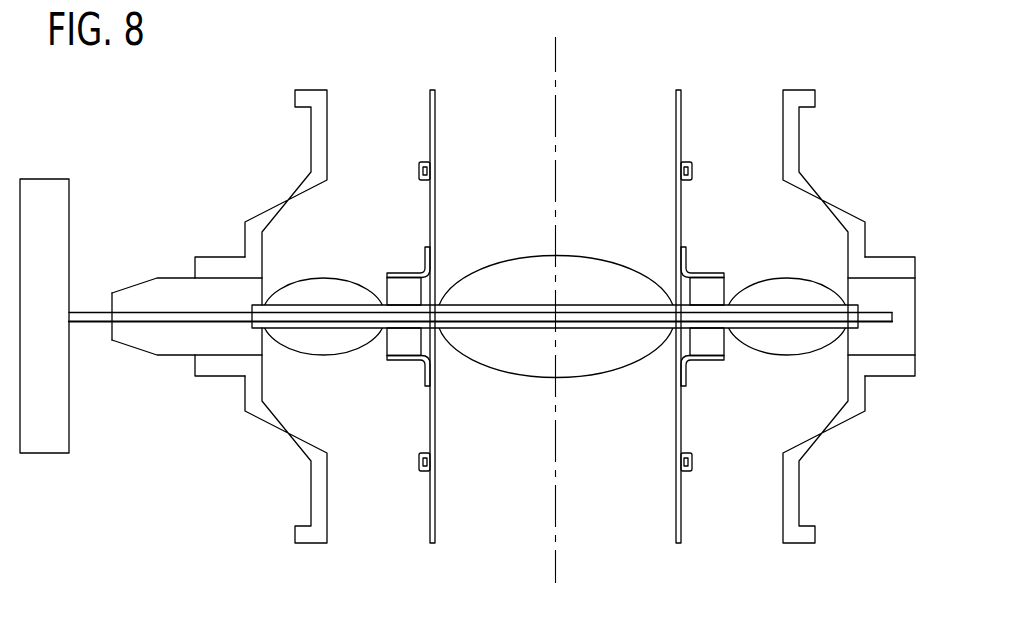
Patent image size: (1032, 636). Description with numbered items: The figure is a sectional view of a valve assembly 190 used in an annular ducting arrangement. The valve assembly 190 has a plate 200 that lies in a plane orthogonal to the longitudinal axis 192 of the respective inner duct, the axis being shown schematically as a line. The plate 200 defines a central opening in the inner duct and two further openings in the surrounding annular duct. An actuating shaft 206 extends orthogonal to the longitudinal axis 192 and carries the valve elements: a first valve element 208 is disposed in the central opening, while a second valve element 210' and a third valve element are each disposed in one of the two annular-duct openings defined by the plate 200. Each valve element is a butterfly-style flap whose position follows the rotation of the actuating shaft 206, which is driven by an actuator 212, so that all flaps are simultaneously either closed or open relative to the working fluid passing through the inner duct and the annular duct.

The valve assembly 190 is at (597, 67).
The longitudinal axis 192 is at (557, 60).
The plate 200 is at (487, 306).
The actuating shaft 206 is at (92, 320).
The first valve element 208 is at (523, 360).
The second valve element 210' is at (787, 287).
The actuator 212 is at (47, 217).